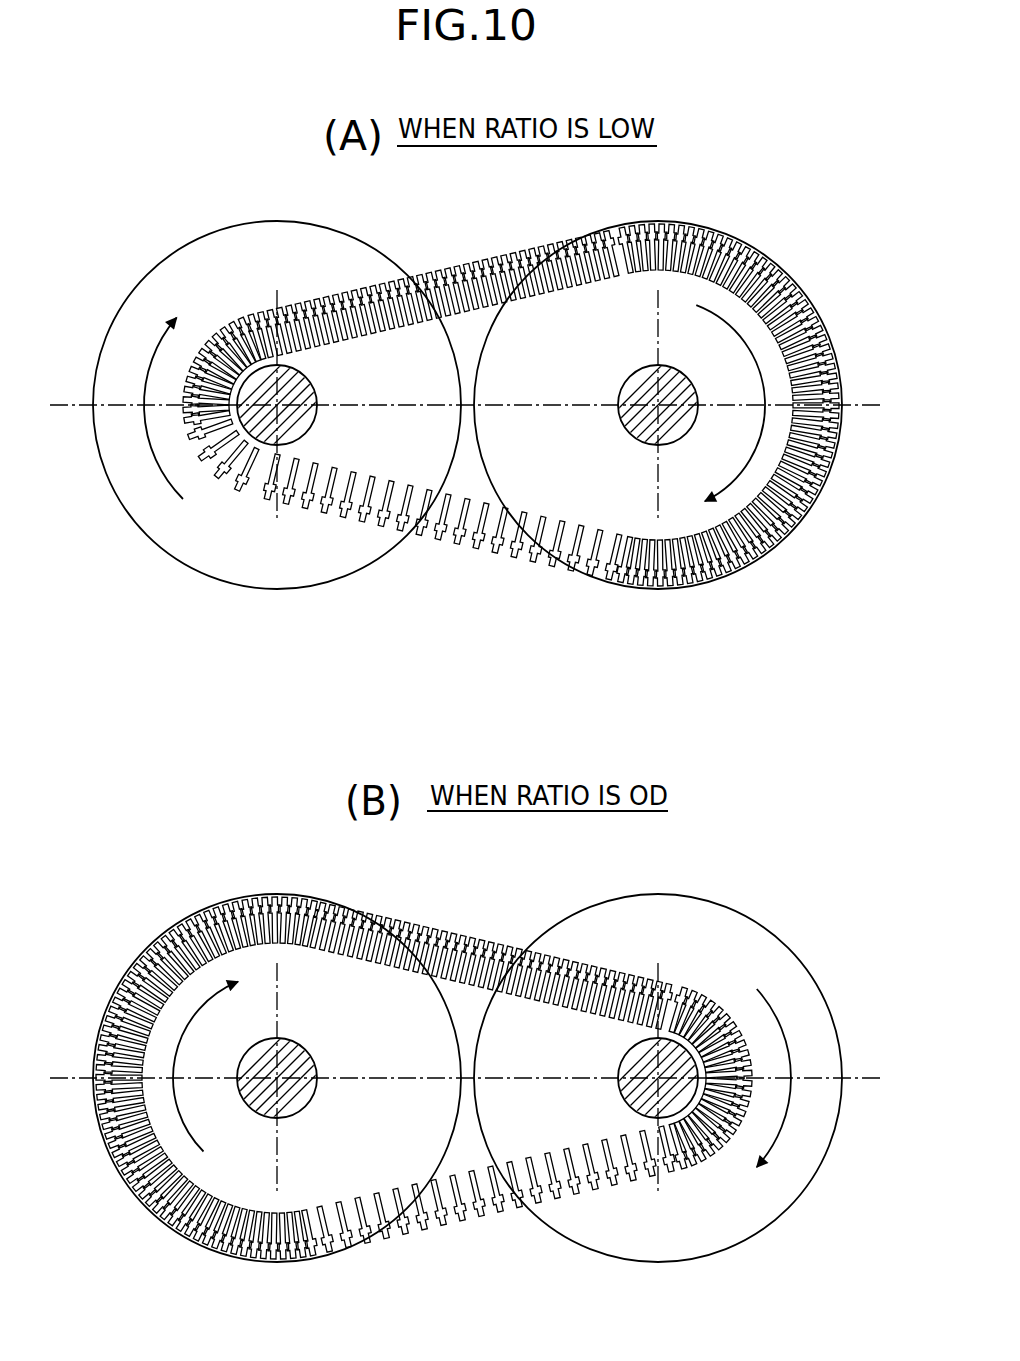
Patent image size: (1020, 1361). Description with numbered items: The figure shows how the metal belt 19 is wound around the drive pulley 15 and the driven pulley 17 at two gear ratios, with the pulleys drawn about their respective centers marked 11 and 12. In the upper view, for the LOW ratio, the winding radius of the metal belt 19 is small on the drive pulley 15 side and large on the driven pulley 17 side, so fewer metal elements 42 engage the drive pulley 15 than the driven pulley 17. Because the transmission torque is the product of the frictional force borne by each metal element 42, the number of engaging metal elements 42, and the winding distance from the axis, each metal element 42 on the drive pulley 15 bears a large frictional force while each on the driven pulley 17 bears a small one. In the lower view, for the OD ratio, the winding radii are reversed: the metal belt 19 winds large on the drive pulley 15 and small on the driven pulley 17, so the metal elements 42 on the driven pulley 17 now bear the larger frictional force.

The primary shaft 11 is at (303, 425).
The secondary shaft 12 is at (630, 385).
The drive pulley 15 is at (213, 267).
The driven pulley 17 is at (680, 302).
The metal belt 19 is at (469, 741).
The metal element 42 is at (384, 332).